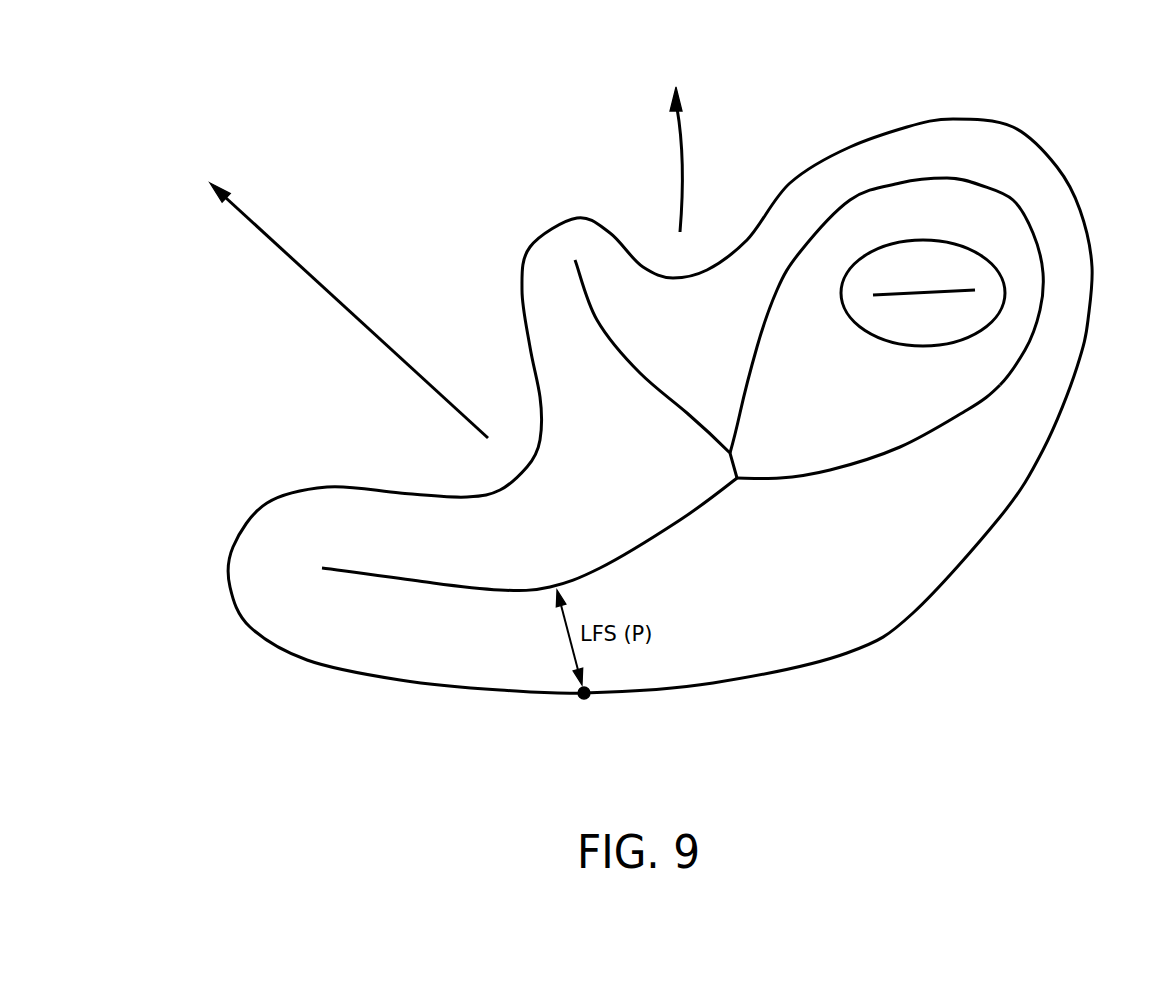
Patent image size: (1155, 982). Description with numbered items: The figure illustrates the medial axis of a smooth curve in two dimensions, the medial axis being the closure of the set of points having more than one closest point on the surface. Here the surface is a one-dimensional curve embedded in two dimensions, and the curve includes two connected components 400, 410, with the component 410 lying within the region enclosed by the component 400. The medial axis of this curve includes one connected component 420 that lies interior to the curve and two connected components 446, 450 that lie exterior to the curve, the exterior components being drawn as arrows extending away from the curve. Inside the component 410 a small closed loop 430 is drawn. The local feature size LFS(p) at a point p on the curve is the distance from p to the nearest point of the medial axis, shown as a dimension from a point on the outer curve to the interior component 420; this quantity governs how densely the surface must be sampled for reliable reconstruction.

The connected component of the curve 400 is at (1002, 123).
The connected component of the curve 410 is at (928, 237).
The interior connected component of the medial axis 420 is at (810, 475).
The ear canal opening 430 is at (910, 290).
The exterior connected component of the medial axis 446 is at (683, 140).
The exterior connected component of the medial axis 450 is at (313, 280).